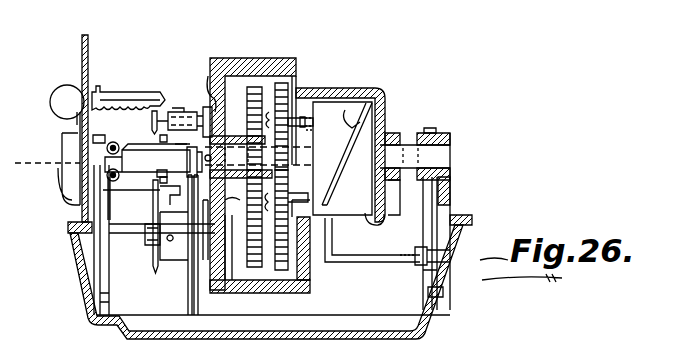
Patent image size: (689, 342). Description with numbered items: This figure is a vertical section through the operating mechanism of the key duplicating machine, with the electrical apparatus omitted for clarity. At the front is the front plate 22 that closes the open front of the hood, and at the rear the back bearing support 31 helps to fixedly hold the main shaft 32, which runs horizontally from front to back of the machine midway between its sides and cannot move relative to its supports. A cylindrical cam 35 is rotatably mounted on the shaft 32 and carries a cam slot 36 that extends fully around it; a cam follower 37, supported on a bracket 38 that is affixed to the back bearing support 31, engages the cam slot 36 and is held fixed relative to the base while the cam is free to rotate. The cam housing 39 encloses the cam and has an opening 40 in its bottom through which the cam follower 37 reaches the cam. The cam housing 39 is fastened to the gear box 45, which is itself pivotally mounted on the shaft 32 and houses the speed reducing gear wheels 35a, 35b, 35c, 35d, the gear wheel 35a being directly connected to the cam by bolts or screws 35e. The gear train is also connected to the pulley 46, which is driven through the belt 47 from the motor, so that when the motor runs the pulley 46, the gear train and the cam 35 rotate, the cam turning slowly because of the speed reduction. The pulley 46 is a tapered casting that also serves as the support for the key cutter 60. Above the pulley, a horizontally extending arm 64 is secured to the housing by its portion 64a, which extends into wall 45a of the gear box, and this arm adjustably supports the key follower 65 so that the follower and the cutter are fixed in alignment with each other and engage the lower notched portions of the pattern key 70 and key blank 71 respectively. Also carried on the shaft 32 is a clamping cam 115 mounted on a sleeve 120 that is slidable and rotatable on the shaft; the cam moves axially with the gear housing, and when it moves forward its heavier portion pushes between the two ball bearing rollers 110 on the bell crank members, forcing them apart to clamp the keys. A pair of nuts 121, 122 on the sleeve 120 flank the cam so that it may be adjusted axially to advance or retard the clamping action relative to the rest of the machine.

The front plate 22 is at (82, 60).
The back bearing support 31 is at (447, 205).
The main shaft 32 is at (410, 145).
The cam 35 is at (330, 110).
The speed reducing gear wheel 35a is at (284, 86).
The speed reducing gear wheel 35b is at (258, 90).
The speed reducing gear wheel 35c is at (283, 272).
The speed reducing gear wheel 35d is at (258, 268).
The bolts or screws 35e is at (305, 130).
The cam slot 36 is at (356, 118).
The cam follower 37 is at (334, 240).
The bracket 38 is at (364, 260).
The cam housing 39 is at (388, 97).
The opening 40 is at (376, 226).
The gear box 45 is at (232, 72).
The wall 45a is at (210, 78).
The pulley 46 is at (188, 280).
The belt 47 is at (196, 302).
The key cutter 60 is at (153, 258).
The horizontally extending arm 64 is at (180, 113).
The portion of arm 64a is at (207, 110).
The key follower 65 is at (152, 128).
The pattern key 70 is at (58, 102).
The key blank 71 is at (62, 197).
The ball bearing rollers 110 is at (113, 182).
The cam 115 is at (133, 160).
The sleeve 120 is at (185, 155).
The nut 121 is at (171, 191).
The nut 122 is at (170, 177).